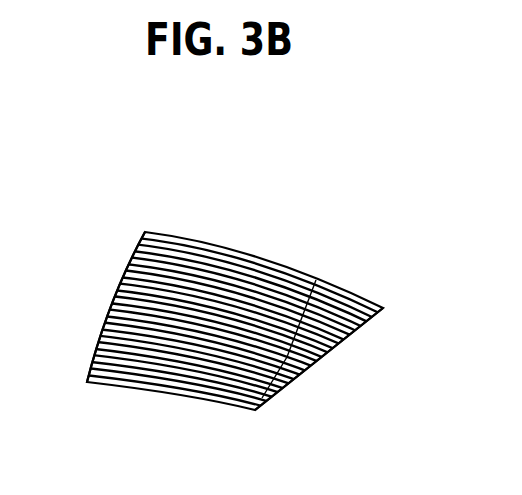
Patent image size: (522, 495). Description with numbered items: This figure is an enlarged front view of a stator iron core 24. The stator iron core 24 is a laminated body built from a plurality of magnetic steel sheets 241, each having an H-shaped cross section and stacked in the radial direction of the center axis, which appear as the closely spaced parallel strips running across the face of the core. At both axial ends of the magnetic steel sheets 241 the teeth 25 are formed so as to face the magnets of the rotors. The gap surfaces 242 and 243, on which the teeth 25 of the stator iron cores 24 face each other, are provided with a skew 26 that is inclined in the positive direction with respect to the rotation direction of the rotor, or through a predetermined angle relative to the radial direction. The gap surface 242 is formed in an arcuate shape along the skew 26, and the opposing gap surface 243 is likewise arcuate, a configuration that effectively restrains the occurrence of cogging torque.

The stator iron core 24 is at (305, 222).
The magnetic steel sheet 241 is at (316, 288).
The gap surface 242 is at (312, 342).
The gap surface 243 is at (112, 291).
The teeth 25 is at (192, 257).
The skew 26 is at (303, 384).